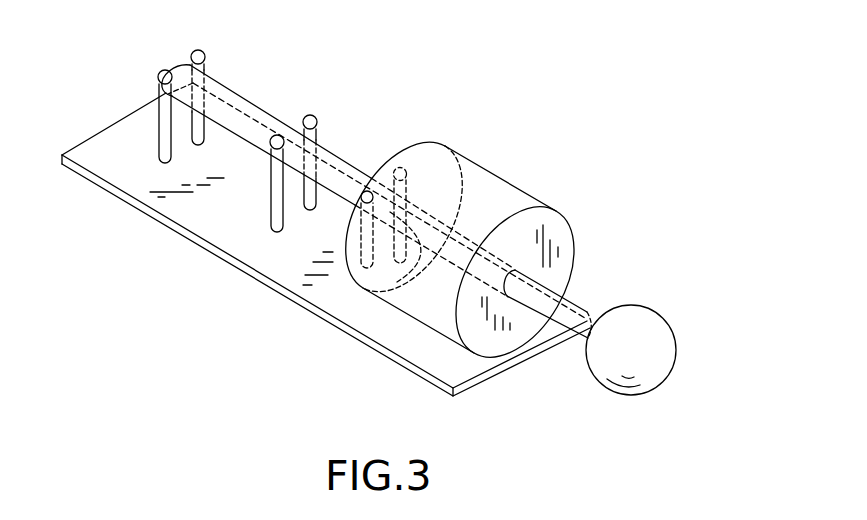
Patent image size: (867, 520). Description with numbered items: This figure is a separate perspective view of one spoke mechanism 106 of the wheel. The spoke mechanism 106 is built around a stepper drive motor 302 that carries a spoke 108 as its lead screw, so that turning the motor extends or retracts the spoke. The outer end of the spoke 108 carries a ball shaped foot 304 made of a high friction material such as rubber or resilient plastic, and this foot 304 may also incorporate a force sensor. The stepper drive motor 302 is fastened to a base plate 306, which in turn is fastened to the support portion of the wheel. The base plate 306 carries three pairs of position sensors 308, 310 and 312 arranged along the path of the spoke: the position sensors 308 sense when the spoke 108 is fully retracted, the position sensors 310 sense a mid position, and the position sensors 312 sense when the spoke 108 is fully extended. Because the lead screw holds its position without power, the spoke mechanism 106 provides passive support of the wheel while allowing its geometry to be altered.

The spoke mechanism 106 is at (676, 100).
The spoke 108 is at (583, 309).
The stepper drive motor 302 is at (507, 184).
The ball shaped foot 304 is at (648, 355).
The base plate 306 is at (468, 388).
The position sensors 308 is at (204, 55).
The position sensors 310 is at (314, 118).
The position sensors 312 is at (368, 195).